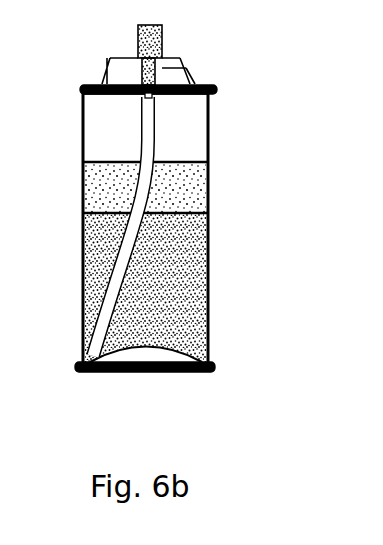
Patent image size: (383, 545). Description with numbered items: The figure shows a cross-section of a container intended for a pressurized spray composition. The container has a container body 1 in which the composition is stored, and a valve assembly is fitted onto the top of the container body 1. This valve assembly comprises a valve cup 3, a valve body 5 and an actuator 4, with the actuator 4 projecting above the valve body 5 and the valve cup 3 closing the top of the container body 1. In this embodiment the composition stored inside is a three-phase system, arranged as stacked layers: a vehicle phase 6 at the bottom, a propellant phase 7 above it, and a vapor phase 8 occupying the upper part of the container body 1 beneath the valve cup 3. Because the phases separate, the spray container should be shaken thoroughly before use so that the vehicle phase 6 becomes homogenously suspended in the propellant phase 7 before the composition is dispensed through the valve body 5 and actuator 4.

The container body 1 is at (83, 293).
The valve cup 3 is at (111, 60).
The actuator 4 is at (162, 33).
The valve body 5 is at (157, 75).
The vehicle phase 6 is at (180, 268).
The propellant phase 7 is at (178, 188).
The vapor phase 8 is at (175, 115).